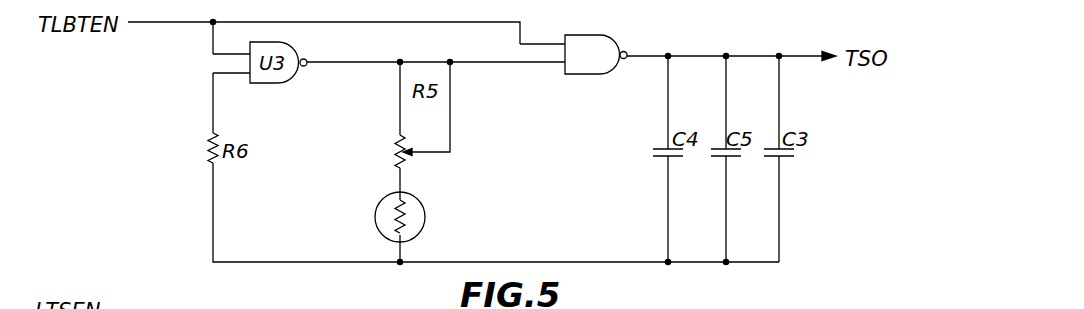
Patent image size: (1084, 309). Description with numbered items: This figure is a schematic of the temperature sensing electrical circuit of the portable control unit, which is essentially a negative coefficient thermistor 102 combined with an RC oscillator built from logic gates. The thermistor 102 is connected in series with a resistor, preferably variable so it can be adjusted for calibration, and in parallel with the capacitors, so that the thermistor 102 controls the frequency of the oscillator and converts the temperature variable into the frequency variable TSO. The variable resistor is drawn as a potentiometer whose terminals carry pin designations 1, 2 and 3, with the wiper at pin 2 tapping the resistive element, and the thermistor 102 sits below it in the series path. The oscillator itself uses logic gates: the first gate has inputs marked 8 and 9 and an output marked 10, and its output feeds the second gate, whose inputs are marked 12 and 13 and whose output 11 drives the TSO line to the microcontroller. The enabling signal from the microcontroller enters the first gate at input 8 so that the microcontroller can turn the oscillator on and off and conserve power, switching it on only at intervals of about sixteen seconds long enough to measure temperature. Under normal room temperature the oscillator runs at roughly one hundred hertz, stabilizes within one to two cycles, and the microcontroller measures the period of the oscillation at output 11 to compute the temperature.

The potentiometer R5 terminal 1 is at (389, 181).
The potentiometer R5 wiper terminal 2 is at (426, 109).
The potentiometer R5 terminal 3 is at (386, 103).
The NAND gate U3 input 8 is at (231, 50).
The NAND gate U3 input 9 is at (231, 82).
The NAND gate U3 output 10 is at (353, 54).
The second NAND gate output 11 (TSO) 11 is at (731, 49).
The second NAND gate input 12 is at (542, 33).
The second NAND gate input 13 is at (482, 76).
The negative coefficient thermistor 102 is at (377, 212).